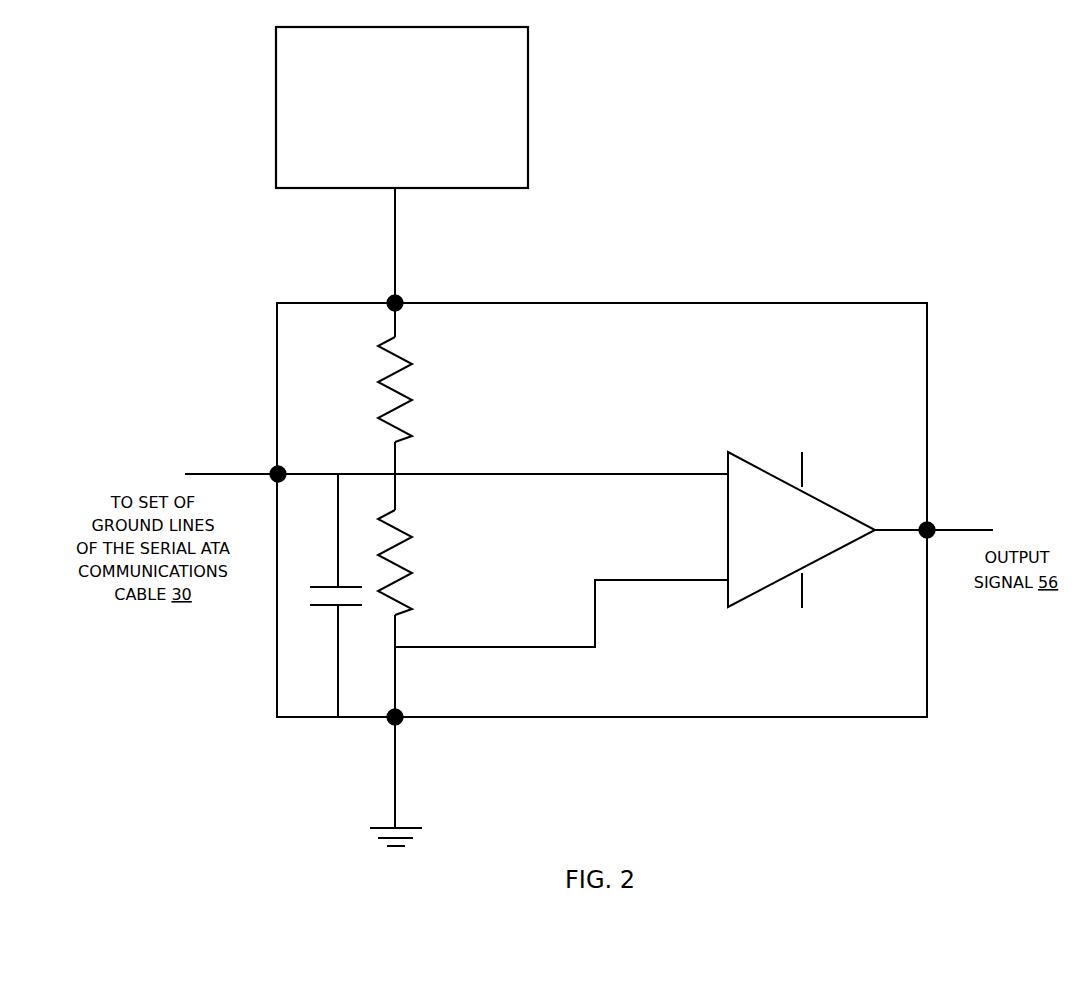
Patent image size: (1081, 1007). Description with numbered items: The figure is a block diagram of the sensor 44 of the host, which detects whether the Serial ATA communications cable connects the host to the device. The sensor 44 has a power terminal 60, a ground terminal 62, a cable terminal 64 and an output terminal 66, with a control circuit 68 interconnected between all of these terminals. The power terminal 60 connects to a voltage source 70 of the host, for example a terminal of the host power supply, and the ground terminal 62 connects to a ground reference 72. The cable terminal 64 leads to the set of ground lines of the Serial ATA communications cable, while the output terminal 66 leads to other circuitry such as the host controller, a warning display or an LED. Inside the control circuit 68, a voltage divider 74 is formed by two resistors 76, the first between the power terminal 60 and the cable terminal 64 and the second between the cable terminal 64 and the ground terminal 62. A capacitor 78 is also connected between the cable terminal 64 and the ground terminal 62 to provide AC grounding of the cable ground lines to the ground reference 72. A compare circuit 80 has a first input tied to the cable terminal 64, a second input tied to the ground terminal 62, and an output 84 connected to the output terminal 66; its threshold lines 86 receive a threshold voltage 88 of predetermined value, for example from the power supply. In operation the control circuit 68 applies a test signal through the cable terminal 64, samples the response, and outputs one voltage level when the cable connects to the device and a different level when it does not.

The sensor 44 is at (193, 162).
The voltage source 70 is at (402, 107).
The control circuit 68 is at (602, 510).
The power terminal 60 is at (402, 298).
The ground terminal 62 is at (401, 722).
The cable terminal 64 is at (270, 467).
The output terminal 66 is at (932, 523).
The ground reference 72 is at (406, 827).
The voltage divider 74 is at (340, 360).
The resistors 76 is at (500, 535).
The capacitor 78 is at (316, 585).
The compare circuit 80 is at (727, 457).
The output 84 is at (900, 533).
The threshold lines 86 is at (818, 576).
The threshold voltage 88 is at (786, 448).